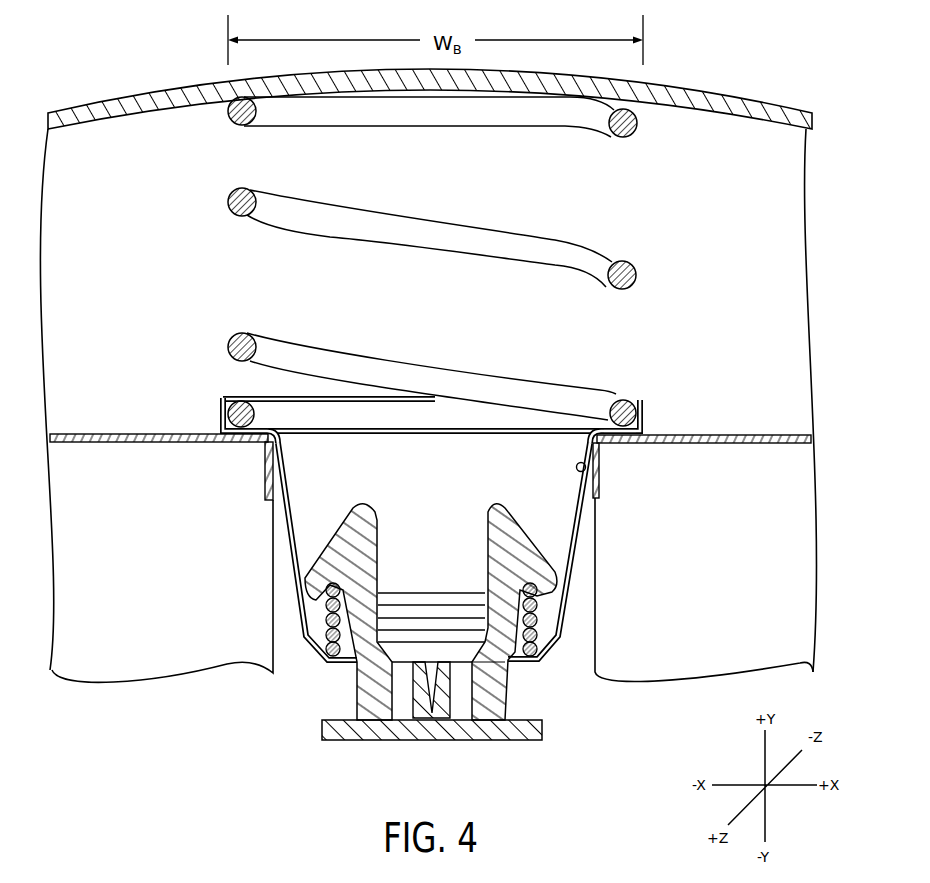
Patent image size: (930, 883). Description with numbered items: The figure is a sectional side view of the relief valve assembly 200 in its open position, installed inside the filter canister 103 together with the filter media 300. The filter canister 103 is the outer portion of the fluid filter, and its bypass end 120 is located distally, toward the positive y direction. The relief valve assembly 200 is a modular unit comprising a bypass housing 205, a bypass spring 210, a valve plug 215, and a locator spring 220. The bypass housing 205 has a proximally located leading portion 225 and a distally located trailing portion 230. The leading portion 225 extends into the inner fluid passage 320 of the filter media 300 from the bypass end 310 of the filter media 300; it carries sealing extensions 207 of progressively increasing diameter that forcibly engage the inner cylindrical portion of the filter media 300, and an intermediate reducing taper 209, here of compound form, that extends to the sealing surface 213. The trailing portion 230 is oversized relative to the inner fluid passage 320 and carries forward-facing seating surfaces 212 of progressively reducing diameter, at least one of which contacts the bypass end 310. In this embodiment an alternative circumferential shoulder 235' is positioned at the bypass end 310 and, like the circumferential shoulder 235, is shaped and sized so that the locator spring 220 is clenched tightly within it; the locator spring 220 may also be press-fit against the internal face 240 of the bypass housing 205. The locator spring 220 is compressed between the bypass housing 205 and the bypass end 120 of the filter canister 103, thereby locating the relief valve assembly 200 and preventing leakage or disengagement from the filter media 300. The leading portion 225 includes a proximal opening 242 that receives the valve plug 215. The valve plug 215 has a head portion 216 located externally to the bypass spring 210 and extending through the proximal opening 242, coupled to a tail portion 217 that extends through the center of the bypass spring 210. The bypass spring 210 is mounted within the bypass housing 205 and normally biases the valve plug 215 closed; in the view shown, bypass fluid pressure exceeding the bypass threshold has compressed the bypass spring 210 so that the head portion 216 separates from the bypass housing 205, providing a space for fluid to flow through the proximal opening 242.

The filter canister 103 is at (697, 88).
The bypass end 120 is at (200, 64).
The relief valve assembly 200 is at (217, 253).
The locator spring 220 is at (583, 258).
The trailing portion 230 is at (408, 352).
The internal face 240 is at (630, 400).
The alternative circumferential shoulder 235' is at (219, 419).
The circumferential shoulder 235 is at (615, 421).
The bypass end 310 is at (706, 426).
The forward-facing seating surfaces 212 is at (624, 430).
The sealing extensions 207 is at (589, 470).
The intermediate reducing taper 209 is at (592, 553).
The inner fluid passage 320 is at (306, 527).
The tail portion 217 is at (368, 520).
The valve plug 215 is at (522, 544).
The sealing surface 213 is at (538, 646).
The head portion 216 is at (494, 727).
The proximal opening 242 is at (555, 695).
The leading portion 225 is at (300, 745).
The bypass housing 205 is at (310, 640).
The bypass spring 210 is at (548, 640).
The filter media 300 is at (82, 597).